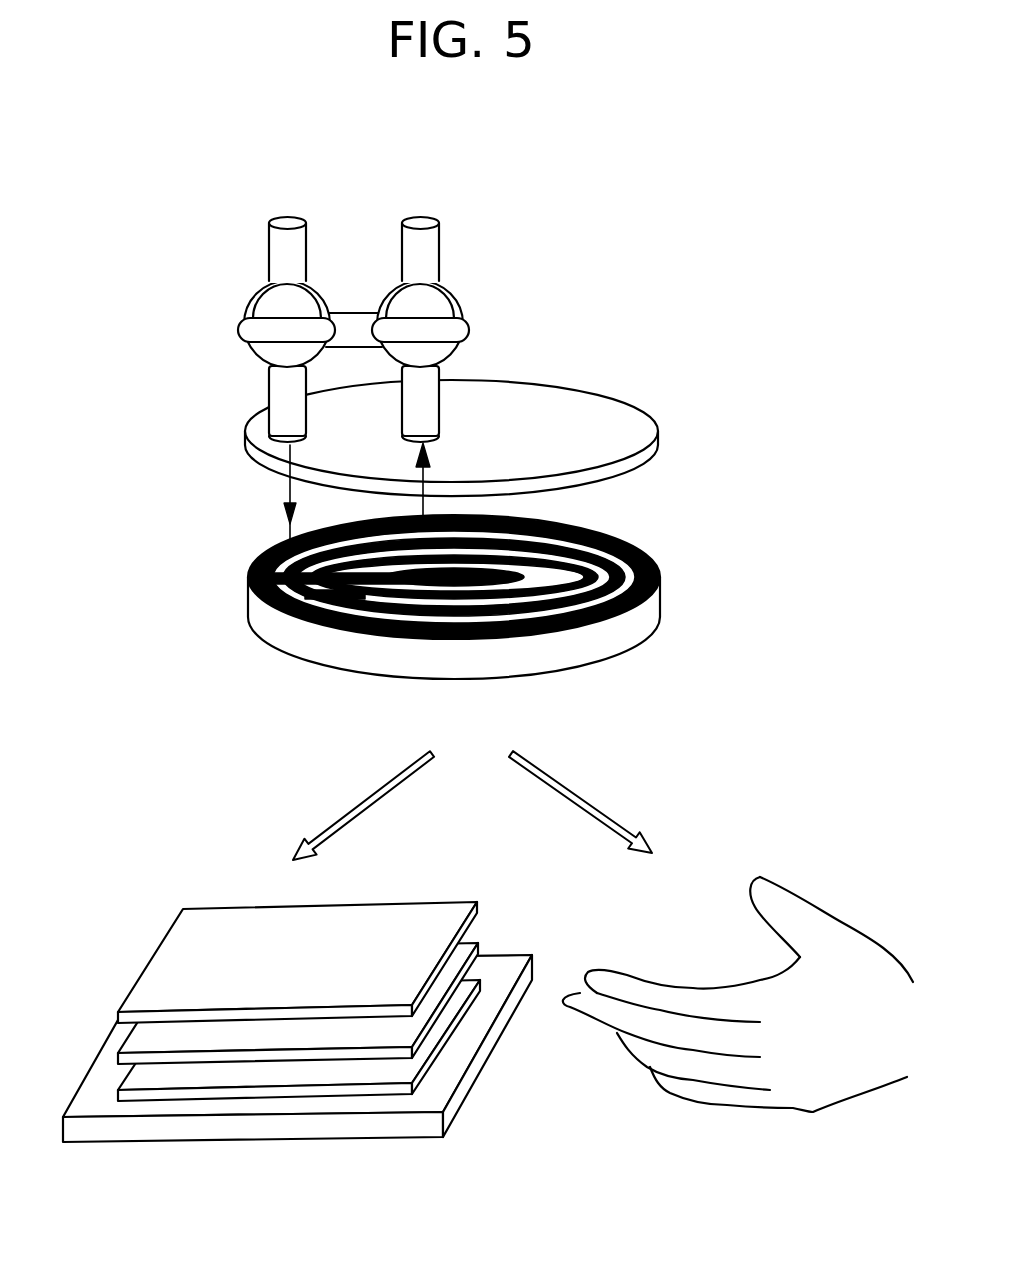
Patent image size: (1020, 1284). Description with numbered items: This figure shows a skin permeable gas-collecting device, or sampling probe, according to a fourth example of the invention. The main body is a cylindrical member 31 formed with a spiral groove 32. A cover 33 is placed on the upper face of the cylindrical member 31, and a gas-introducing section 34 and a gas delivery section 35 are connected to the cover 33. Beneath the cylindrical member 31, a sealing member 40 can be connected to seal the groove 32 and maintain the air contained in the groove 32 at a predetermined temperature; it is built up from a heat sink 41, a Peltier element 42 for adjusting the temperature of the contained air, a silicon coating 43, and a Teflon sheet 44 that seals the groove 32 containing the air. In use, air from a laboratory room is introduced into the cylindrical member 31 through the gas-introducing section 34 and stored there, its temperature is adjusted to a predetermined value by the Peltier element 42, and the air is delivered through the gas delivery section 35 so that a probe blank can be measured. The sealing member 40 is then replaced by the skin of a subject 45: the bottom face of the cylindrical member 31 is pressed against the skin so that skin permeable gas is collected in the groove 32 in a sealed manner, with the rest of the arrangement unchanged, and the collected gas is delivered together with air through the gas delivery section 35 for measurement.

The cylindrical member 31 is at (252, 518).
The spiral groove 32 is at (252, 588).
The cover 33 is at (658, 443).
The gas-introducing section 34 is at (280, 249).
The gas delivery section 35 is at (430, 247).
The sealing member 40 is at (296, 971).
The heat sink 41 is at (455, 1057).
The Peltier element 42 is at (132, 1078).
The silicon coating 43 is at (137, 1035).
The Teflon sheet 44 is at (158, 963).
The subject 45 is at (680, 981).